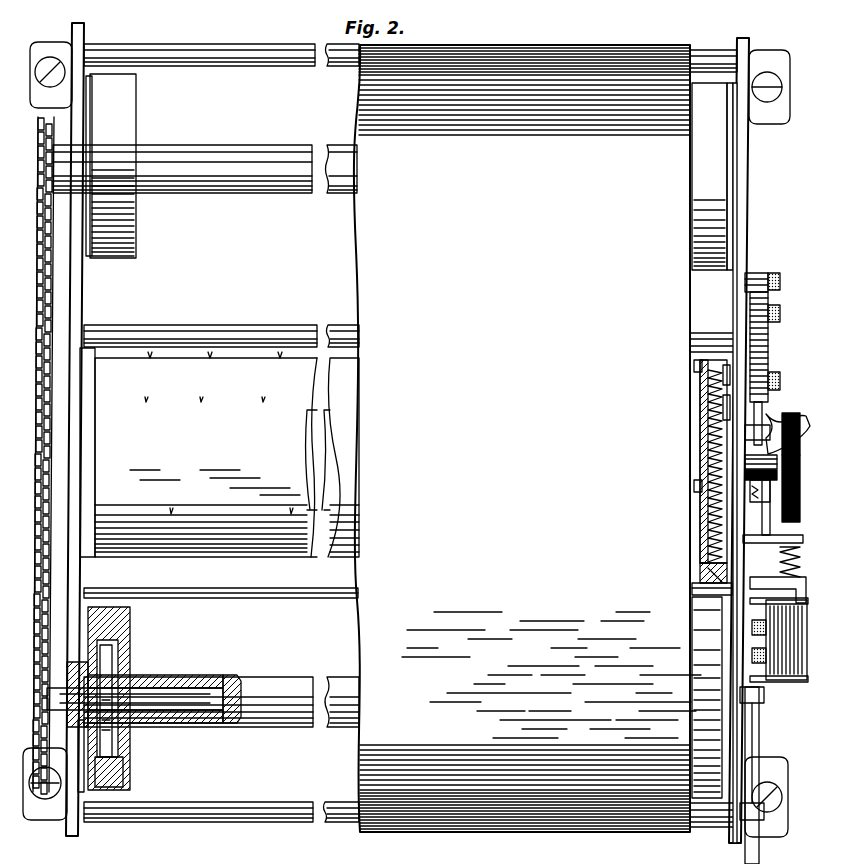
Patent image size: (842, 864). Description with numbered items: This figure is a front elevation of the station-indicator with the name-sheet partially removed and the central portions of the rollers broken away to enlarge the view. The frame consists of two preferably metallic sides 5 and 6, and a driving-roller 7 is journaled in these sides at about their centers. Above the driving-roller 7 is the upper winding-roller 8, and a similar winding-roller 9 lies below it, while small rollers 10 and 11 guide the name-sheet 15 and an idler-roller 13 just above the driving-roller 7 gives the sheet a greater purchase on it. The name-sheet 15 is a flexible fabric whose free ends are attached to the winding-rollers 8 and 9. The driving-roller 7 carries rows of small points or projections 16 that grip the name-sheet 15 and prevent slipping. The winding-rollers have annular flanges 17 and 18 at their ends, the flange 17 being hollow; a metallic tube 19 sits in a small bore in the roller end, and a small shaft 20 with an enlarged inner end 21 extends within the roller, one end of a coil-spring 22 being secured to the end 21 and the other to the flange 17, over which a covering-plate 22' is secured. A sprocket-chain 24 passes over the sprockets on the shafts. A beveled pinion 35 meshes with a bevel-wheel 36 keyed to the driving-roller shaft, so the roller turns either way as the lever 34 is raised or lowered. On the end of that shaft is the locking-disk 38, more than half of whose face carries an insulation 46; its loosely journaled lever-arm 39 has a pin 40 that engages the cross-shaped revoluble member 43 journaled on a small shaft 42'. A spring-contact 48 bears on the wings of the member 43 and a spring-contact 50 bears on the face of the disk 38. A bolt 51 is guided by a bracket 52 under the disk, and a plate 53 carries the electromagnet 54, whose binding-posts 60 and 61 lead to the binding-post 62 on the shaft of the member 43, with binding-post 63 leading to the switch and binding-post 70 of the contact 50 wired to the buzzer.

The side 5 is at (80, 312).
The side 6 is at (738, 285).
The driving-roller 7 is at (219, 452).
The upper winding-roller 8 is at (256, 182).
The winding-roller 9 is at (296, 686).
The roller 10 is at (232, 815).
The roller 11 is at (205, 52).
The idler-roller 13 is at (210, 330).
The name-sheet 15 is at (527, 438).
The points or projections 16 is at (170, 513).
The annular flange 17 is at (136, 110).
The annular flange 18 is at (705, 95).
The metallic tube 19 is at (170, 682).
The shaft 20 is at (100, 715).
The enlarged inner end 21 is at (212, 698).
The coil-spring 22 is at (139, 772).
The covering-plate 22' is at (110, 428).
The sprocket-chain 24 is at (36, 506).
The lever 34 is at (700, 570).
The beveled pinion 35 is at (750, 505).
The bevel-wheel 36 is at (710, 450).
The locking-disk 38 is at (788, 414).
The lever-arm 39 is at (745, 480).
The pin 40 is at (745, 523).
The shaft 42' is at (681, 381).
The revoluble member 43 is at (745, 412).
The insulation 46 is at (745, 430).
The spring-contact 48 is at (745, 317).
The spring-contact 50 is at (745, 470).
The bolt or pin 51 is at (745, 545).
The bracket 52 is at (705, 578).
The plate 53 is at (755, 636).
The electromagnet 54 is at (775, 636).
The binding-post 60 is at (740, 672).
The binding-post 61 is at (702, 603).
The binding-post 62 is at (774, 372).
The binding-post 63 is at (784, 301).
The binding-post 70 is at (562, 490).